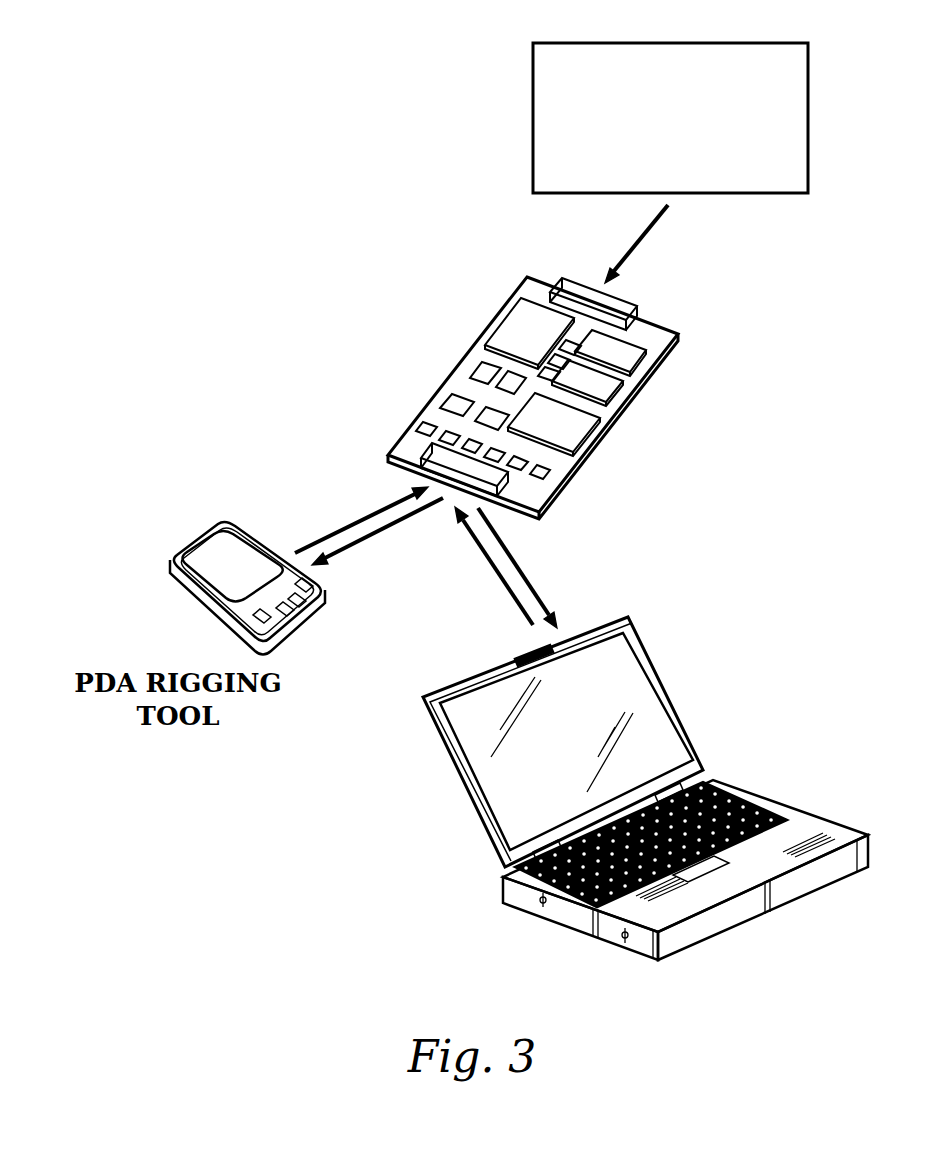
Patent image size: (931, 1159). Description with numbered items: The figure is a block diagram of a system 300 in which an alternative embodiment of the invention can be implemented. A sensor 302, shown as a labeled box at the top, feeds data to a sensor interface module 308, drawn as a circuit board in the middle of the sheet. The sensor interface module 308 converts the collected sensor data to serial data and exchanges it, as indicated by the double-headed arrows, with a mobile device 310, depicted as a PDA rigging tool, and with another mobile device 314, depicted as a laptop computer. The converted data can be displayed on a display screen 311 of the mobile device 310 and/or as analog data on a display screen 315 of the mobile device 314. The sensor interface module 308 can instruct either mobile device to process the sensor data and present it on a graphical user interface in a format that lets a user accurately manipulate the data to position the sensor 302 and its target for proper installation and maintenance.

The system 300 is at (186, 84).
The sensor 302 is at (659, 166).
The sensor interface module 308 is at (467, 370).
The mobile device 310 is at (317, 613).
The display screen 311 is at (205, 557).
The mobile device 314 is at (677, 957).
The display screen 315 is at (542, 745).